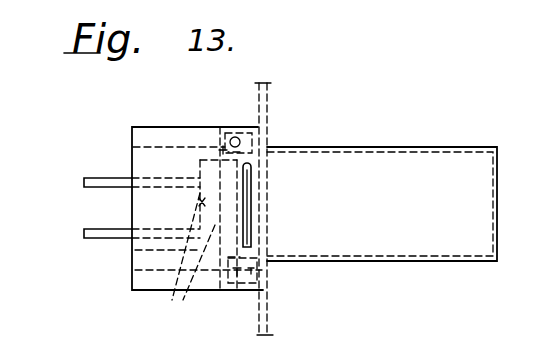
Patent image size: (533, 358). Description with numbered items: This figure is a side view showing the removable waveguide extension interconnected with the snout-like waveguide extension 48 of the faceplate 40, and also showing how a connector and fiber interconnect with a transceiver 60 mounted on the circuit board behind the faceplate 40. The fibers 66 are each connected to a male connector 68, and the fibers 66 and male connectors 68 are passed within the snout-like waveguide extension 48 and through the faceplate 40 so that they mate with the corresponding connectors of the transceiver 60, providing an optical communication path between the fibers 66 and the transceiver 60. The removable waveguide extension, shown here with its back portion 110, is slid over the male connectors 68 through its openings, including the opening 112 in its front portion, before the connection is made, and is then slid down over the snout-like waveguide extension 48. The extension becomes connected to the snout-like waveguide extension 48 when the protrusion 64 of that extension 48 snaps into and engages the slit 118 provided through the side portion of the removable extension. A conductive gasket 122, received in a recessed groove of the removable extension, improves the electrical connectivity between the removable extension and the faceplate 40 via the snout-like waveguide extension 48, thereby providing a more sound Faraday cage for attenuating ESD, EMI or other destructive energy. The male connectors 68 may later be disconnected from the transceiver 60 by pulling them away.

The back portion 110 is at (137, 121).
The snout-like waveguide extension 48 is at (219, 127).
The faceplate 40 is at (263, 107).
The transceiver 60 is at (446, 246).
The fibers 66 is at (92, 228).
The slit 118 is at (252, 203).
The conductive gasket 122 is at (237, 272).
The opening 112 is at (150, 257).
The male connector 68 is at (182, 262).
The protrusion 64 is at (248, 222).